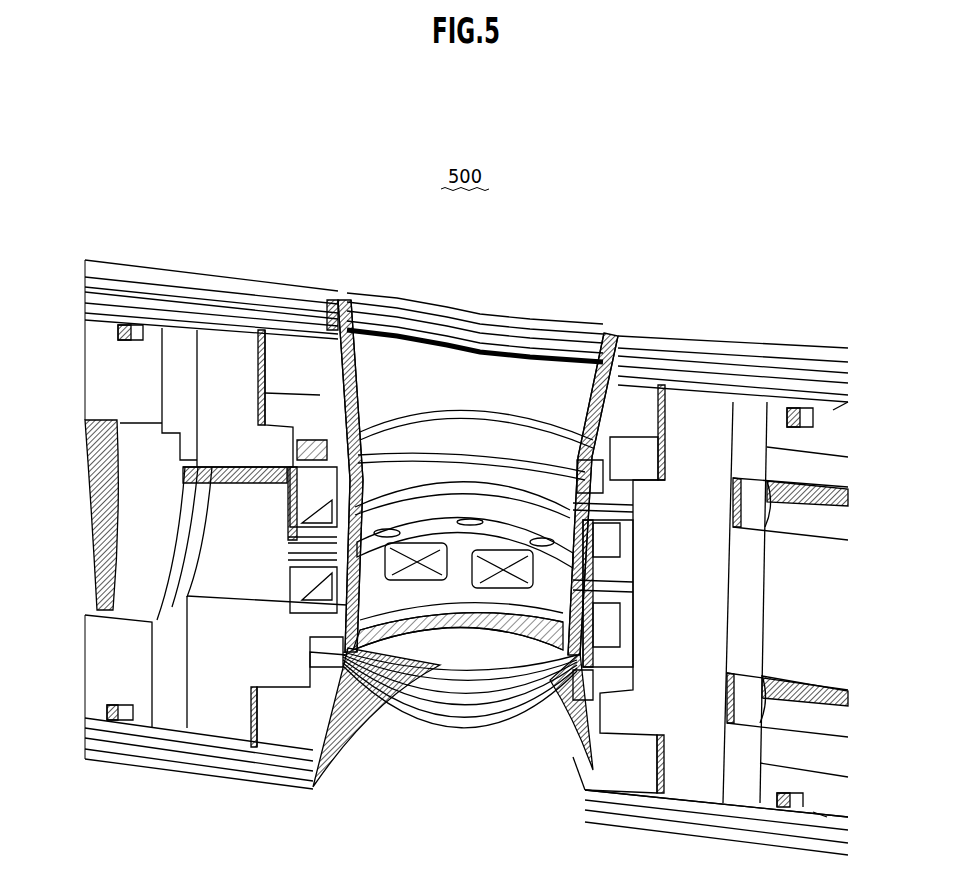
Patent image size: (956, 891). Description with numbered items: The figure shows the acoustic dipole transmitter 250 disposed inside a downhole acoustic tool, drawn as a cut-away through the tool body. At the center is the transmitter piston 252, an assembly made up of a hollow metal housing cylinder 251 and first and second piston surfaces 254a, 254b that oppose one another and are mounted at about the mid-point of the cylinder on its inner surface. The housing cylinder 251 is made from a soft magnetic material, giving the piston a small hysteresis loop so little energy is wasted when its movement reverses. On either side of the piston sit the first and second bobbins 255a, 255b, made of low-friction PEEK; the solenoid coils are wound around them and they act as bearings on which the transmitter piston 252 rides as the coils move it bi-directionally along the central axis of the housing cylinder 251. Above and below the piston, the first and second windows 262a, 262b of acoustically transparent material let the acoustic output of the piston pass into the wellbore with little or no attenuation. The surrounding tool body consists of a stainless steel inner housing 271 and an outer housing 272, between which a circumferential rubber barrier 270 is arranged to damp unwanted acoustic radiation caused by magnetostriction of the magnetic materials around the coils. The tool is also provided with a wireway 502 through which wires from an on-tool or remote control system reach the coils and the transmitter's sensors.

The wireway 502 is at (250, 542).
The acoustic dipole transmitter 250 is at (405, 468).
The housing cylinder 251 is at (346, 535).
The transmitter piston 252 is at (375, 513).
The first piston surface 254a is at (507, 540).
The second piston surface 254b is at (533, 588).
The first bobbin 255a is at (605, 543).
The second bobbin 255b is at (603, 633).
The first window 262a is at (444, 455).
The second window 262b is at (433, 665).
The barrier 270 is at (642, 360).
The inner housing 271 is at (655, 373).
The outer housing 272 is at (625, 347).